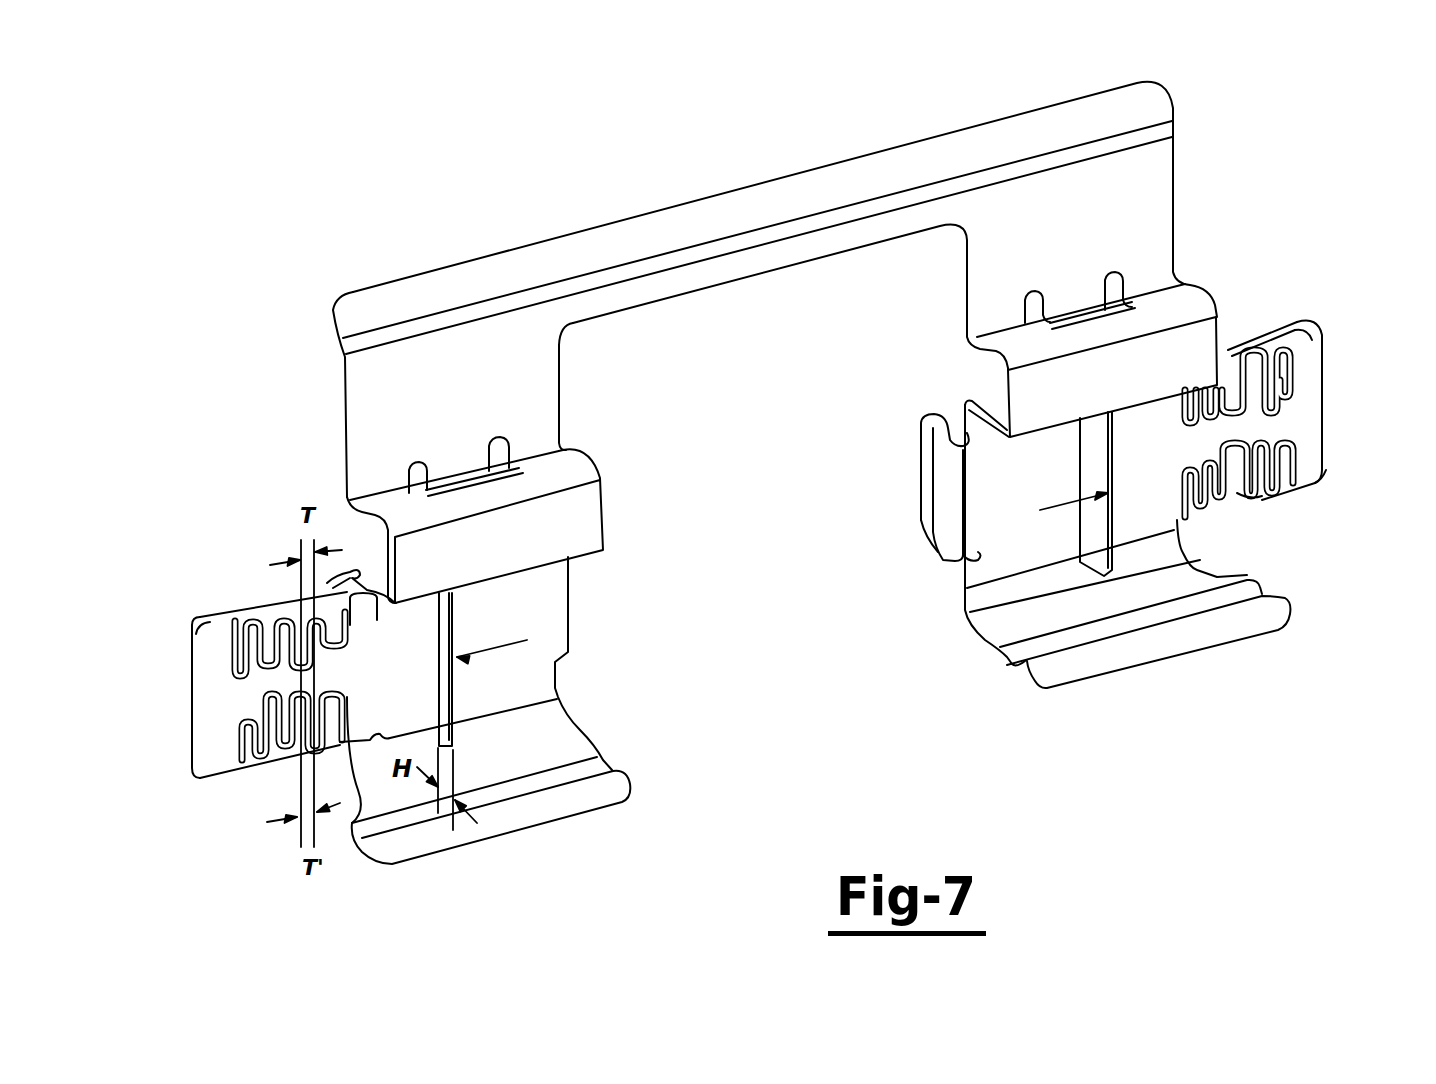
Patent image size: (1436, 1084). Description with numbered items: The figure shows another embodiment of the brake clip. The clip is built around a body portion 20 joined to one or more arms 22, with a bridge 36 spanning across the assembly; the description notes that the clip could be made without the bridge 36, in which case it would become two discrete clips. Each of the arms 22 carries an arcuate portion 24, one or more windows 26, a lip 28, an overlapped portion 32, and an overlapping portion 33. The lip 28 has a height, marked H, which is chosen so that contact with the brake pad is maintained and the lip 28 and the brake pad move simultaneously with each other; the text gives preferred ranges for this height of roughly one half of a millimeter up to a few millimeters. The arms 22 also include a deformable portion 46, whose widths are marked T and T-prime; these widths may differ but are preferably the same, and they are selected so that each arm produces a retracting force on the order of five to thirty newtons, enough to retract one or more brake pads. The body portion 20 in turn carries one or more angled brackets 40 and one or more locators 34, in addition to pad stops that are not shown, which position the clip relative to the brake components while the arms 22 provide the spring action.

The body portion 20 is at (547, 613).
The arms 22 is at (245, 775).
The arcuate portion 24 is at (190, 630).
The windows 26 is at (307, 680).
The lip 28 is at (1103, 520).
The overlapped portion 32 is at (1237, 493).
The overlapping portion 33 is at (1323, 474).
The locators 34 is at (923, 468).
The bridge 36 is at (766, 192).
The angled brackets 40 is at (568, 508).
The deformable portion 46 is at (280, 723).